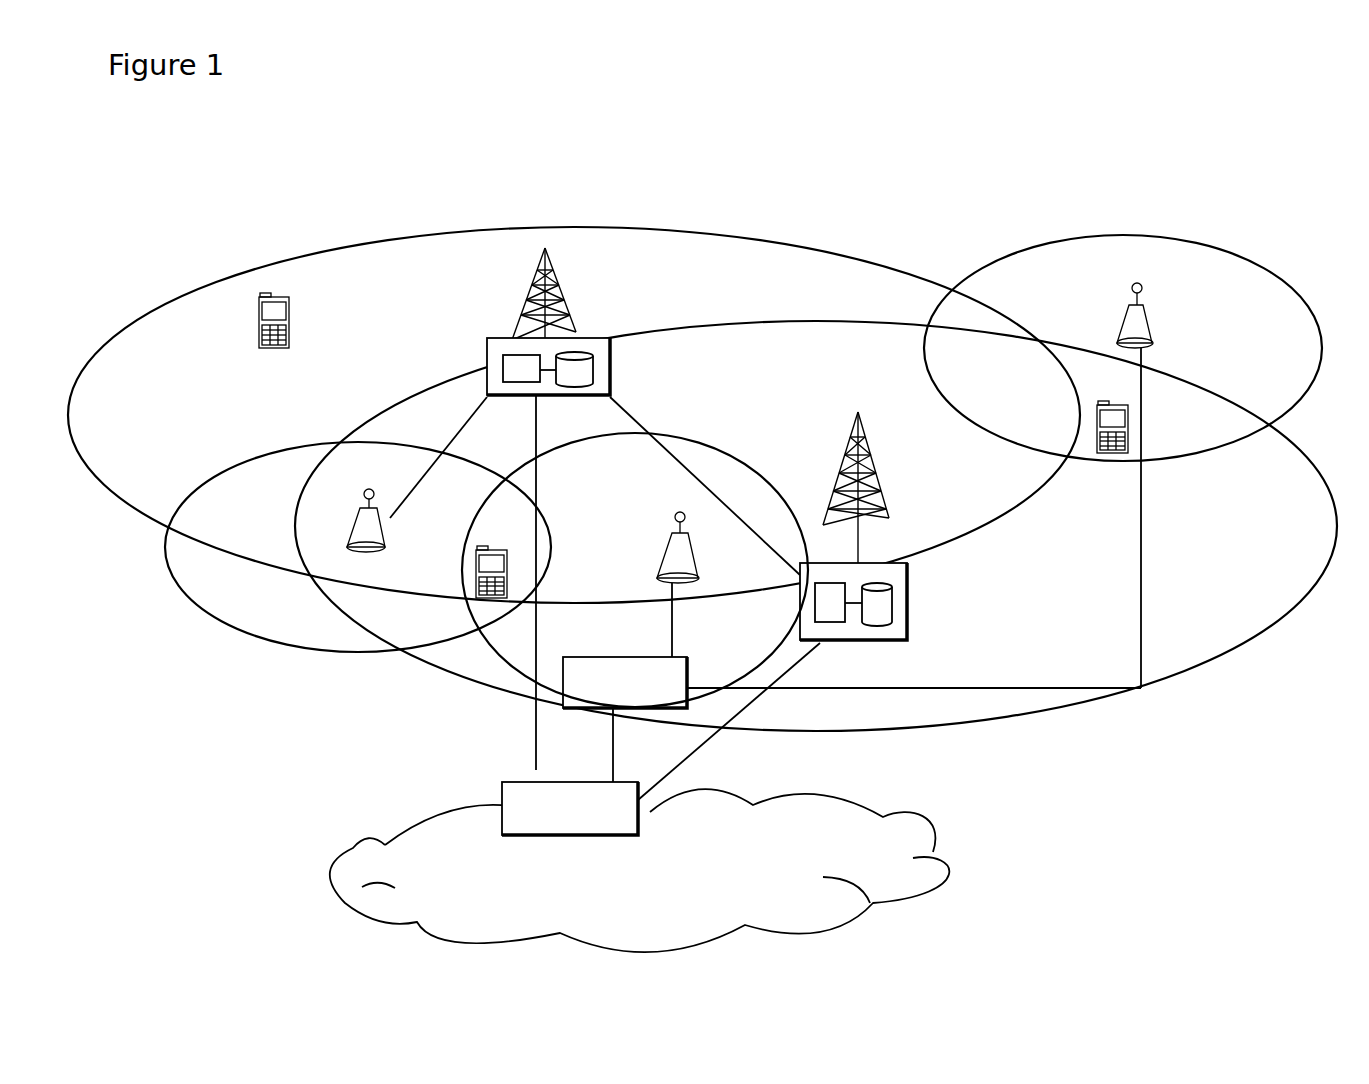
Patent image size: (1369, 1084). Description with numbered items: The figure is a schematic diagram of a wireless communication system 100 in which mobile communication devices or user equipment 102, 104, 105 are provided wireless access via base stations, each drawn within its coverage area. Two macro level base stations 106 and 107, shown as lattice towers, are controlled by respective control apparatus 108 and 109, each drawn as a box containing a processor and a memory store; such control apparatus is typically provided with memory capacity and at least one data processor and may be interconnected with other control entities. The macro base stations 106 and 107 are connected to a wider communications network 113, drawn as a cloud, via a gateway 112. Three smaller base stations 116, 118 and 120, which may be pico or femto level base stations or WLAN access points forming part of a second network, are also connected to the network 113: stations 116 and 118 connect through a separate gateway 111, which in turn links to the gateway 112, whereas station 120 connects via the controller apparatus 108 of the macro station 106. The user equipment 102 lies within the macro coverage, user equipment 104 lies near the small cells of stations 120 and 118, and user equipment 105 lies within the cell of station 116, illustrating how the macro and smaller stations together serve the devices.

The wireless communication system 100 is at (178, 282).
The user equipment 102 is at (257, 338).
The user equipment 104 is at (475, 575).
The user equipment 105 is at (1113, 457).
The macro level base station 106 is at (527, 300).
The macro level base station 107 is at (883, 488).
The control apparatus 108 is at (487, 353).
The control apparatus 109 is at (897, 630).
The gateway 111 is at (563, 690).
The gateway 112 is at (503, 782).
The wider communications network 113 is at (420, 845).
The smaller base station 116 is at (1120, 320).
The smaller base station 118 is at (680, 565).
The smaller base station 120 is at (353, 525).